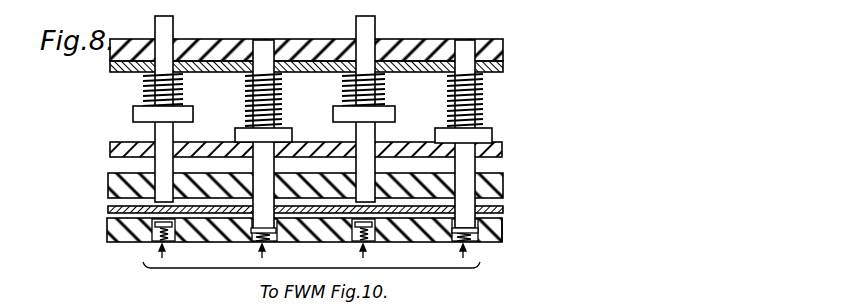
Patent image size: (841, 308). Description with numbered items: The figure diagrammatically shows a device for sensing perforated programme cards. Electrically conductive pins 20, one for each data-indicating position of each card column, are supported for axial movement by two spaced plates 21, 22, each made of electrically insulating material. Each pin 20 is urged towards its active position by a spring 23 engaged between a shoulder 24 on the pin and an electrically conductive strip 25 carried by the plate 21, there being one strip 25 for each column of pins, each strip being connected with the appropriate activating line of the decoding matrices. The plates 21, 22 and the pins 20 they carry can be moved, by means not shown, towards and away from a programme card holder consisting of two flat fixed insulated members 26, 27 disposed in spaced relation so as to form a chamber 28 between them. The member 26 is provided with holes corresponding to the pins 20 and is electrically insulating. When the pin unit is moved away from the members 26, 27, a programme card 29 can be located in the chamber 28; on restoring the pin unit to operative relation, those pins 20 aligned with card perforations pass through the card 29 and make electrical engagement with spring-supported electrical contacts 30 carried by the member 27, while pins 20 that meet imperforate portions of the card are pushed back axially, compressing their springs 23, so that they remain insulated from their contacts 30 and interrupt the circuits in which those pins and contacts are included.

The electrically conductive pin 20 is at (263, 43).
The plate 21 is at (313, 30).
The plate 22 is at (112, 147).
The spring 23 is at (184, 96).
The shoulder 24 is at (193, 114).
The electrically conductive strip 25 is at (145, 65).
The insulated member 26 is at (110, 177).
The insulated member 27 is at (108, 223).
The chamber 28 is at (503, 208).
The programme card 29 is at (503, 221).
The spring-supported electrical contact 30 is at (250, 243).